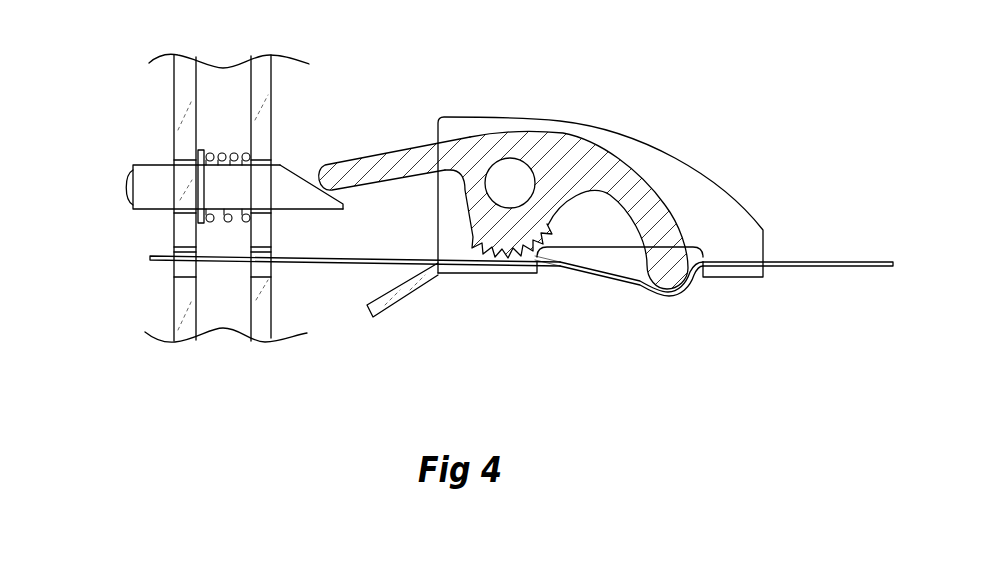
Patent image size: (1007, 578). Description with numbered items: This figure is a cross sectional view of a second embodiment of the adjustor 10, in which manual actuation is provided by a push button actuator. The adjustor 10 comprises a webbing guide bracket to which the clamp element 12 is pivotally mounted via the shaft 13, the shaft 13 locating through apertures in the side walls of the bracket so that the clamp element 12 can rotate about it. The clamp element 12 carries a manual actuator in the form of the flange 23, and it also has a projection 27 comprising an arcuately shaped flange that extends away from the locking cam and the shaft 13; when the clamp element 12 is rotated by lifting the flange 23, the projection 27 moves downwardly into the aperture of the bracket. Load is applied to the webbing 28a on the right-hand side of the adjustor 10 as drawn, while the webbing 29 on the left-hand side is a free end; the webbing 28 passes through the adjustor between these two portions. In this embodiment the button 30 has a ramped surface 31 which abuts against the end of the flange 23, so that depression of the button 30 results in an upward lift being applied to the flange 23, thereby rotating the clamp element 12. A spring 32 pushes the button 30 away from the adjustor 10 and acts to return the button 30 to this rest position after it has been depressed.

The adjustor 10 is at (732, 145).
The clamp element 12 is at (583, 110).
The shaft 13 is at (499, 194).
The flange 23 is at (403, 143).
The projection 27 is at (640, 276).
The flexible blade 28 is at (590, 274).
The webbing 28a is at (812, 266).
The webbing 29 is at (337, 262).
The button 30 is at (157, 175).
The ramped surface 31 is at (293, 163).
The spring 32 is at (228, 222).